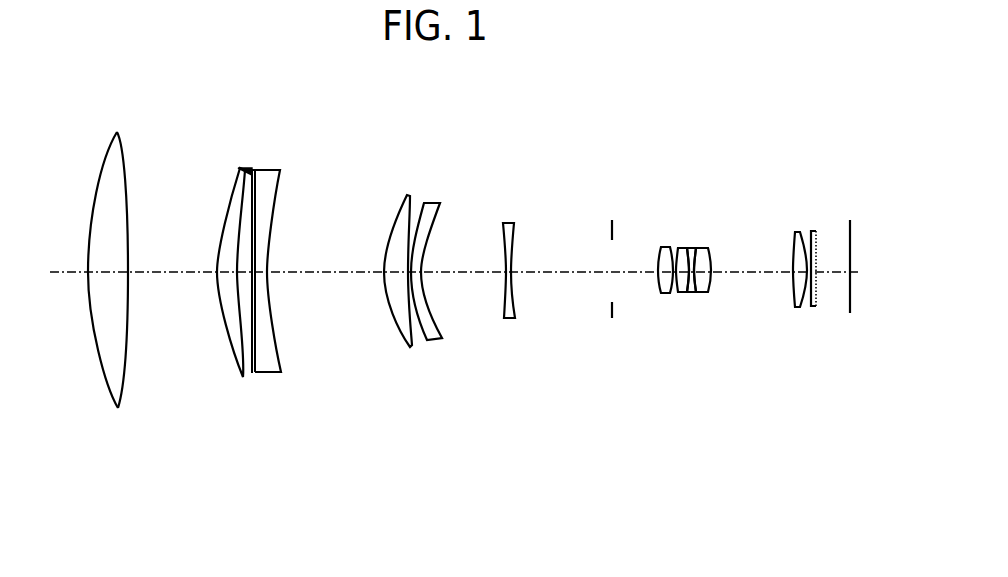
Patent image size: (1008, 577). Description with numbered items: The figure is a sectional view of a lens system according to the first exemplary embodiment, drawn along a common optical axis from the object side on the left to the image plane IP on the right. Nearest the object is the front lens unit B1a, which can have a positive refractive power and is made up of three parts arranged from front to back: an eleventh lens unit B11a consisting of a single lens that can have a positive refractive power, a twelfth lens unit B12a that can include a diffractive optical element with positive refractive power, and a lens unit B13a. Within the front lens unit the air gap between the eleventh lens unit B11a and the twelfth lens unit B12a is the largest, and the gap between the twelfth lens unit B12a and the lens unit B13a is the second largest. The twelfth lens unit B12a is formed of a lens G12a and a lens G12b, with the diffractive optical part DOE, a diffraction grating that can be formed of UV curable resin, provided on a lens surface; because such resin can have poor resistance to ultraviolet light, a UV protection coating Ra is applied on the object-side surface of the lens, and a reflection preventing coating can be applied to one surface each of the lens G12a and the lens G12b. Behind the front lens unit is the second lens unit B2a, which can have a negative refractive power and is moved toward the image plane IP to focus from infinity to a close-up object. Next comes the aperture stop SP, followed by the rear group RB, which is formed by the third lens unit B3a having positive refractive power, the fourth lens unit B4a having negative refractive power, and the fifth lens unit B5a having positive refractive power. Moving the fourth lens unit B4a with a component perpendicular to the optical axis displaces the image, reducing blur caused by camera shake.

The UV protection coating Ra is at (125, 165).
The diffractive optical part DOE is at (240, 167).
The lens G12a is at (230, 207).
The lens G12b is at (245, 168).
The eleventh lens unit B11a is at (128, 268).
The twelfth lens unit B12a is at (237, 254).
The lens unit B13a is at (417, 301).
The front lens unit B1a is at (267, 293).
The second lens unit B2a is at (523, 332).
The aperture stop SP is at (612, 222).
The third lens unit B3a is at (673, 304).
The fourth lens unit B4a is at (677, 304).
The fifth lens unit B5a is at (825, 357).
The rear group RB is at (727, 347).
The image plane IP is at (850, 232).